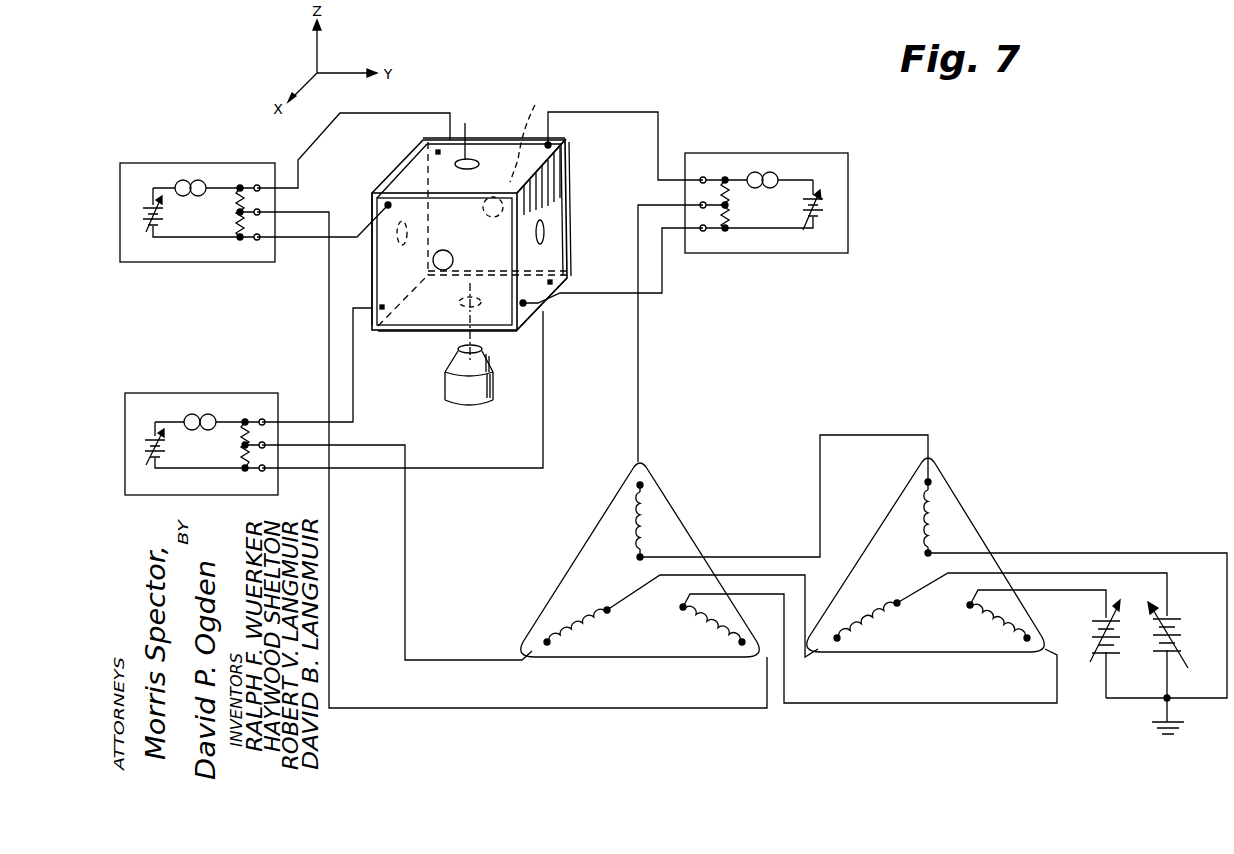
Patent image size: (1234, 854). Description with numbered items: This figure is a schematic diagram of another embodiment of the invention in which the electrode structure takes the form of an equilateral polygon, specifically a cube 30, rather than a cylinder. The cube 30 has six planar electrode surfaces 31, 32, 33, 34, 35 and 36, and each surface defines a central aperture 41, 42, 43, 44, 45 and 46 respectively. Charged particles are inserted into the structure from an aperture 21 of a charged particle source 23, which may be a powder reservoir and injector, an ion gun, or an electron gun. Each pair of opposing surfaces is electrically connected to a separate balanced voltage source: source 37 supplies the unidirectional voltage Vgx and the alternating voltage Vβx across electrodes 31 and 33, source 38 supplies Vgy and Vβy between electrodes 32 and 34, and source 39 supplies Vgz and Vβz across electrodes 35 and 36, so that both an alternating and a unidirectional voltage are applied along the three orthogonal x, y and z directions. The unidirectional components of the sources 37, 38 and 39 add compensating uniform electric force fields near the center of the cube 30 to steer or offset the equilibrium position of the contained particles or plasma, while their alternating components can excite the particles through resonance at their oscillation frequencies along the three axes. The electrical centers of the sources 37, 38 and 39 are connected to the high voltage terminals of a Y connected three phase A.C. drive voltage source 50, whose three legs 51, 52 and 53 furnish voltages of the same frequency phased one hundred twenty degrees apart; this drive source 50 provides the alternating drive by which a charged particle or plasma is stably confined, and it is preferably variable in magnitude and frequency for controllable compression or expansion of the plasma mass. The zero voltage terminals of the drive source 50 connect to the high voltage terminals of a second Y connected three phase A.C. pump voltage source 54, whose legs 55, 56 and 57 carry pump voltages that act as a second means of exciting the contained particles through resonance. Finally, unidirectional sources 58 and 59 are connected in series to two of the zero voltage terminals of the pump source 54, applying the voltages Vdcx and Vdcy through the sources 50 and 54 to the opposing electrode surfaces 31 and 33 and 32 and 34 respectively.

The aperture 21 is at (480, 351).
The charged particle source 23 is at (494, 392).
The cube 30 is at (492, 67).
The planar electrode surface 31 is at (566, 143).
The planar electrode surface 32 is at (560, 183).
The planar electrode surface 33 is at (378, 286).
The planar electrode surface 34 is at (372, 198).
The planar electrode surface 35 is at (397, 336).
The planar electrode surface 36 is at (459, 148).
The balanced voltage source 37 is at (184, 154).
The balanced voltage source 38 is at (194, 384).
The balanced voltage source 39 is at (749, 148).
The central aperture 41 is at (533, 133).
The central aperture 42 is at (545, 232).
The central aperture 43 is at (450, 253).
The central aperture 44 is at (392, 192).
The central aperture 45 is at (460, 305).
The central aperture 46 is at (473, 158).
The three phase A.C. drive voltage source 50 is at (669, 460).
The leg of A.C. drive voltage source 51 is at (708, 626).
The leg of A.C. drive voltage source 52 is at (578, 616).
The leg of A.C. drive voltage source 53 is at (645, 528).
The three phase A.C. pump voltage source 54 is at (952, 457).
The leg of A.C. pump voltage source 55 is at (1002, 626).
The leg of A.C. pump voltage source 56 is at (866, 614).
The leg of A.C. pump voltage source 57 is at (933, 527).
The unidirectional source 58 is at (1086, 640).
The unidirectional source 59 is at (1183, 648).